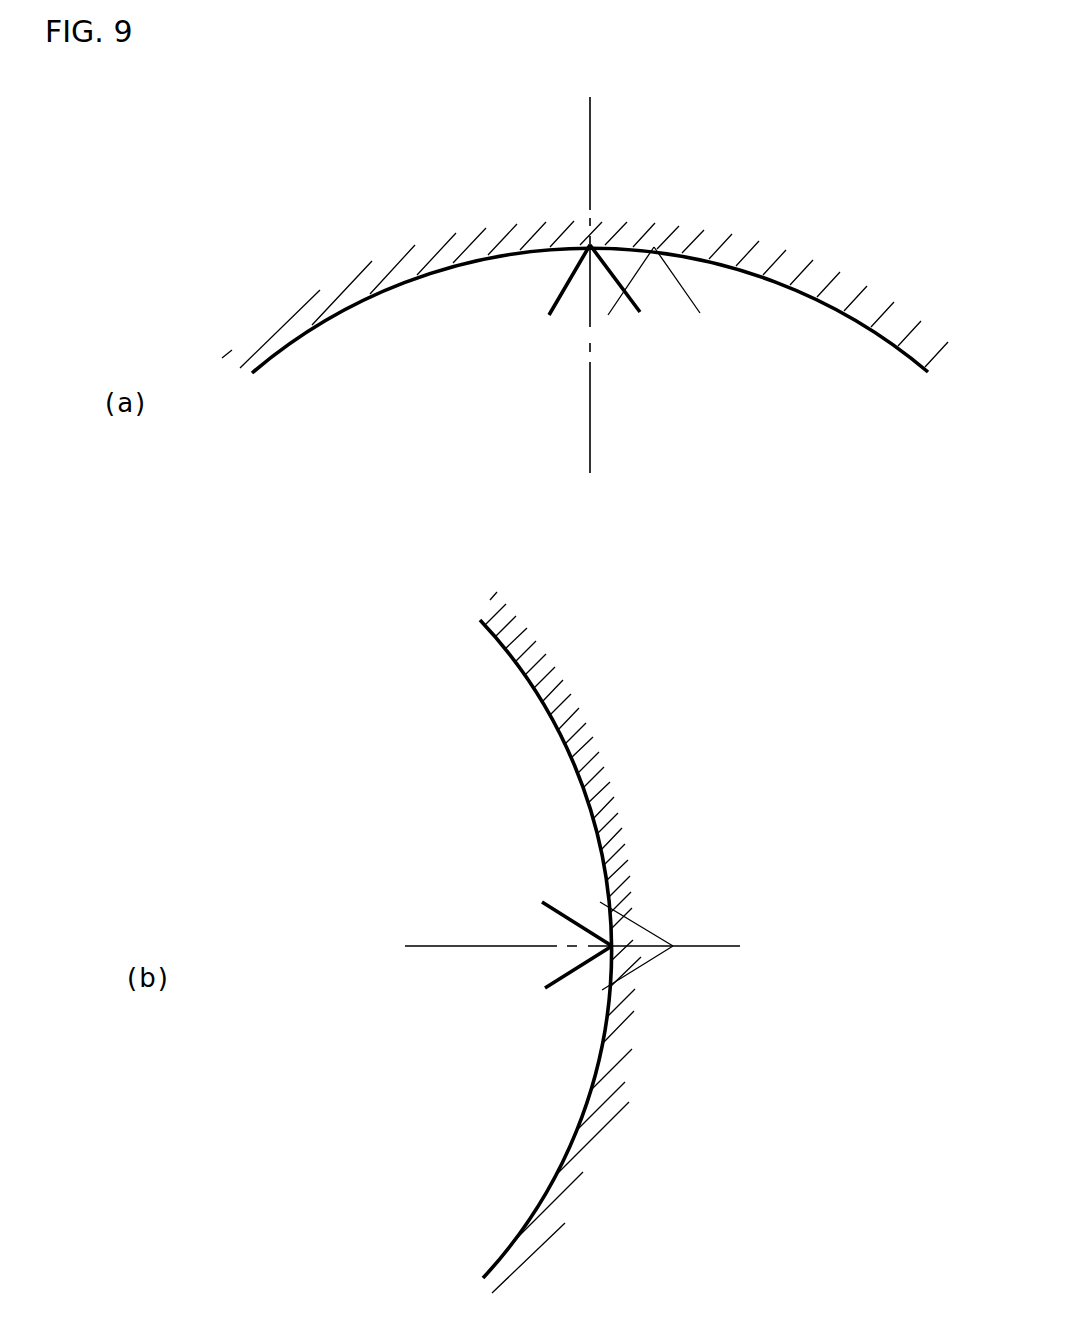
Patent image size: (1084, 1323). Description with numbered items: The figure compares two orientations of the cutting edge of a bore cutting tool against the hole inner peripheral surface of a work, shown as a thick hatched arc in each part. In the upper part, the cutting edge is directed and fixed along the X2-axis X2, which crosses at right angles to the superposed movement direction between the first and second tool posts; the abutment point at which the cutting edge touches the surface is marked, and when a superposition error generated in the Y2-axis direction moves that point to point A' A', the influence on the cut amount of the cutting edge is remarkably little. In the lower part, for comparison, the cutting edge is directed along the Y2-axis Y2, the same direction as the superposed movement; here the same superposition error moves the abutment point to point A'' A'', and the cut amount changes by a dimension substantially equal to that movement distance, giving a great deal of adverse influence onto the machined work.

The X2-axis X2 is at (623, 278).
The Y2-axis Y2 is at (572, 931).
The point A' is at (669, 221).
The point A" A'' is at (688, 914).